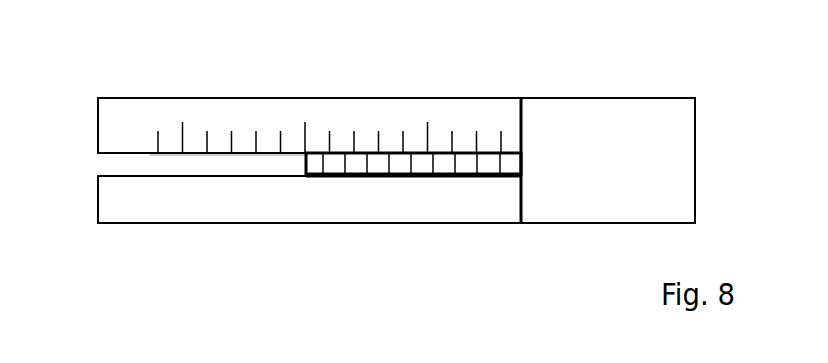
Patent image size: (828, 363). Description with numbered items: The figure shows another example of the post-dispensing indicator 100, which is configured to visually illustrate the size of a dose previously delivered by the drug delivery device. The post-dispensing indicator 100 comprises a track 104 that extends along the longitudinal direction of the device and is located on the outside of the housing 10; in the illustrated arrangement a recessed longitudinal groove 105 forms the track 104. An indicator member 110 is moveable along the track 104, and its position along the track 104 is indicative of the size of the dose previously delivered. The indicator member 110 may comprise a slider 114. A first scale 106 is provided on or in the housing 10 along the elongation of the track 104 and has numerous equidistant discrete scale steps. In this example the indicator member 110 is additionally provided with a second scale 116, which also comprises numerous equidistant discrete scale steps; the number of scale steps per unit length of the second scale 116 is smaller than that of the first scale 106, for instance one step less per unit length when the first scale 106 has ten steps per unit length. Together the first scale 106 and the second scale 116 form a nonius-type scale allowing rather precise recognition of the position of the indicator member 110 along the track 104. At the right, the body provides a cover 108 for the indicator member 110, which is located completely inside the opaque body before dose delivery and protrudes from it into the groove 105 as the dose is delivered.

The housing 10 is at (206, 92).
The post-dispensing indicator 100 is at (440, 77).
The track 104 is at (100, 163).
The groove 105 is at (180, 163).
The first scale 106 is at (331, 127).
The cover 108 is at (617, 125).
The indicator member 110 is at (421, 167).
The slider 114 is at (465, 167).
The second scale 116 is at (400, 193).